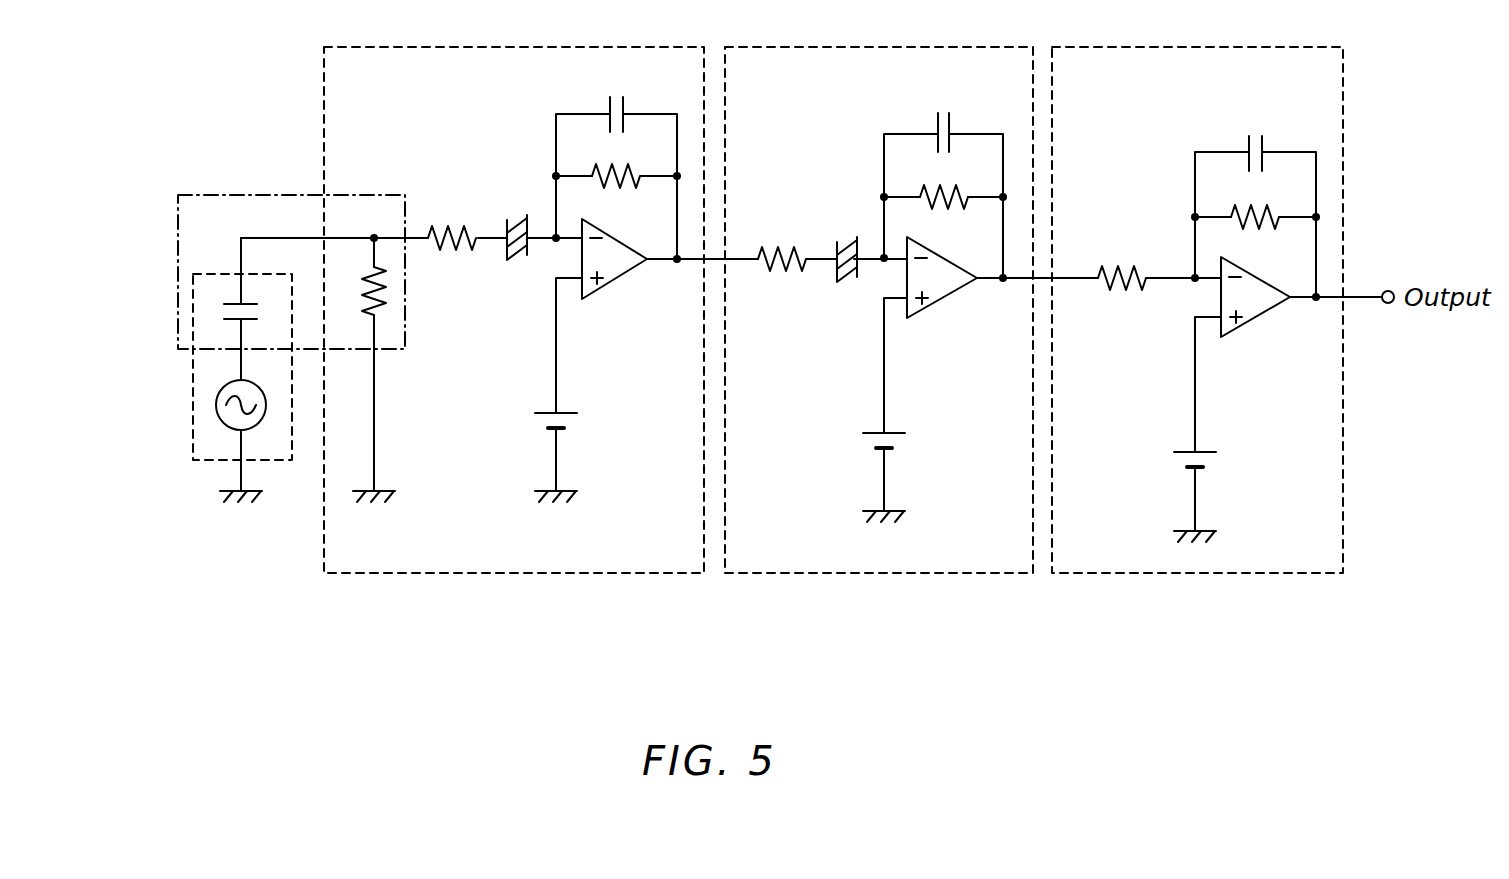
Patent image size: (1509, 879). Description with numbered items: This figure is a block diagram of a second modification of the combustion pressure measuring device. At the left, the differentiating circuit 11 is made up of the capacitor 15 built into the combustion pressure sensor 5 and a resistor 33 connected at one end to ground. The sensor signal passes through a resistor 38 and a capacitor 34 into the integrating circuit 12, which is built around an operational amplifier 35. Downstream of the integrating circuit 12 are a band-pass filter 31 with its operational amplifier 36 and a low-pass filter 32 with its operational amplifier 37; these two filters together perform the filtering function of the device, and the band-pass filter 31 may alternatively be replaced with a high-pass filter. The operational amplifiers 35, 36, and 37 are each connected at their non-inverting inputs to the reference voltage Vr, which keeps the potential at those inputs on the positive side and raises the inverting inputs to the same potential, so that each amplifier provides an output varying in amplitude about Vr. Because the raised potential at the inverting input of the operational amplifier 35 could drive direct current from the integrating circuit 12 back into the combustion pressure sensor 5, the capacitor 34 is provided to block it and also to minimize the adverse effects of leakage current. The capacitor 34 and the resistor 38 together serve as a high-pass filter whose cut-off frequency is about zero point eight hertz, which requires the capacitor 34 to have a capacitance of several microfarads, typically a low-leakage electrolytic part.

The combustion pressure sensor 5 is at (193, 400).
The differentiating circuit 11 is at (232, 195).
The integrating circuit 12 is at (619, 47).
The capacitor 15 is at (234, 305).
The band-pass filter 31 is at (945, 47).
The low-pass filter 32 is at (1256, 47).
The resistor 33 is at (382, 317).
The capacitor 34 is at (506, 219).
The operational amplifier 35 is at (618, 279).
The operational amplifier 36 is at (942, 298).
The operational amplifier 37 is at (1257, 317).
The resistor 38 is at (439, 222).